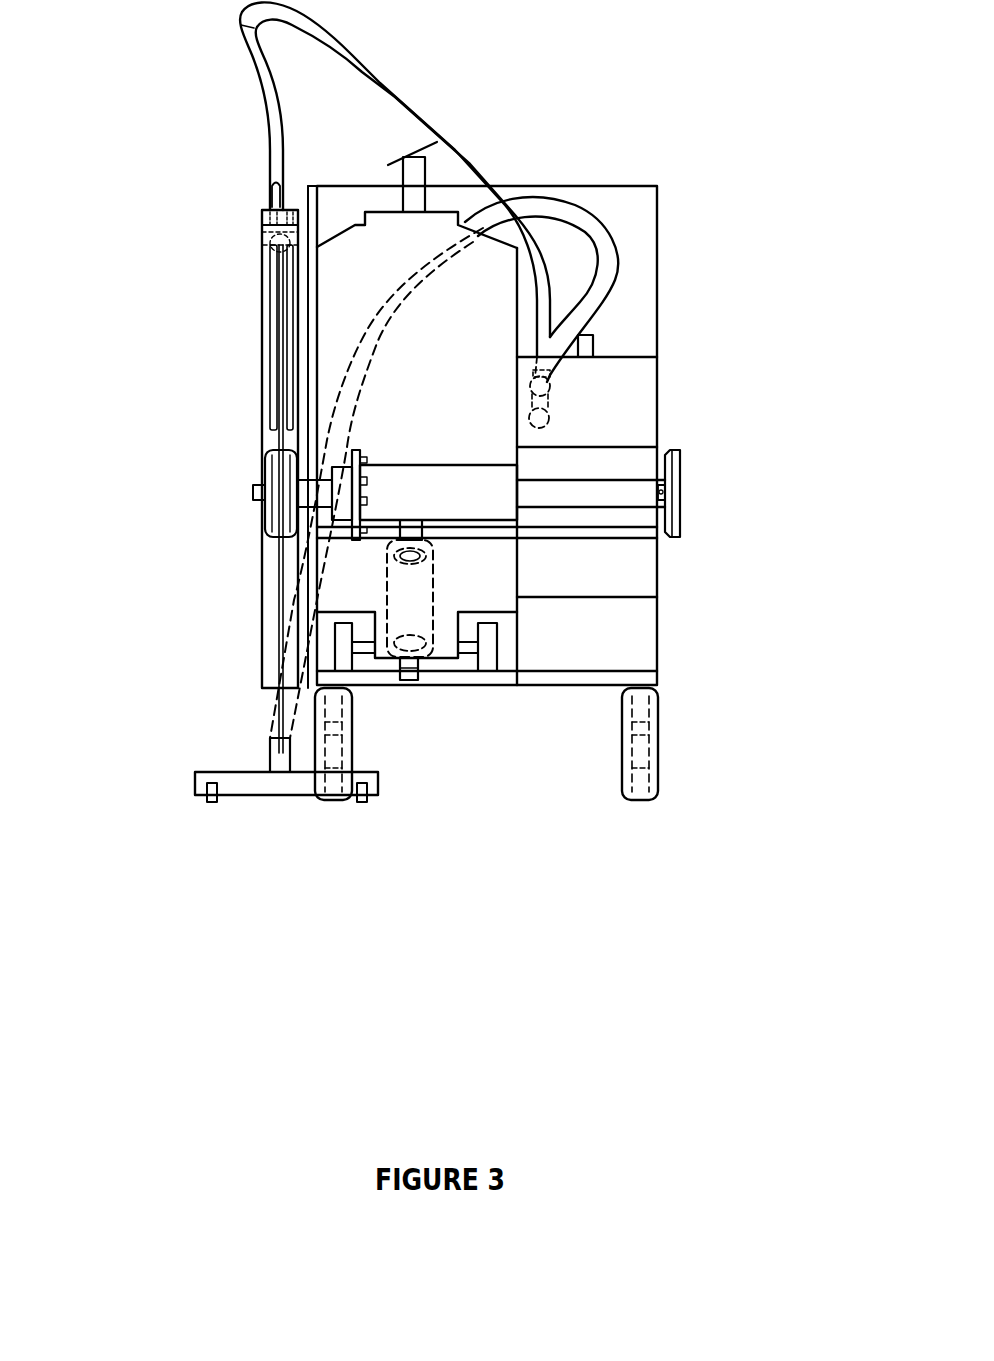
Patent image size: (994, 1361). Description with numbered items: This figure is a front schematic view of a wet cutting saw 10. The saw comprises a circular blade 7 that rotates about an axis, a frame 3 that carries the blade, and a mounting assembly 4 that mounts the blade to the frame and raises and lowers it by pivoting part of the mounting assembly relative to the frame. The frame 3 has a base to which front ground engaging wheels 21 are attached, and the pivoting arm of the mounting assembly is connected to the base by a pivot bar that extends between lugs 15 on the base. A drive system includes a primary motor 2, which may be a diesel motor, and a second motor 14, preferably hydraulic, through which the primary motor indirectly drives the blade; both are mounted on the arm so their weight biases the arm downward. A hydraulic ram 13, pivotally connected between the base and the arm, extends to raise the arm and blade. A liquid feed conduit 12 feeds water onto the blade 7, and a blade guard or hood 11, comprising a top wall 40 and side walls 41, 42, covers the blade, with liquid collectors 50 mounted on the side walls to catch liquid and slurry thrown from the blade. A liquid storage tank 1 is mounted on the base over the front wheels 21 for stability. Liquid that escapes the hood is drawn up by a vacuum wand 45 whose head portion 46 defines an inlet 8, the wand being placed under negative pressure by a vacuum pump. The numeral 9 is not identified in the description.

The liquid storage tank 1 is at (625, 387).
The primary motor 2 is at (393, 240).
The frame 3 is at (577, 682).
The mounting assembly 4 is at (497, 578).
The circular blade 7 is at (275, 578).
The inlet 8 is at (282, 773).
The bracket 9 is at (348, 463).
The wet cutting saw 10 is at (632, 233).
The blade guard or hood 11 is at (262, 307).
The liquid feed conduit 12 is at (267, 128).
The hydraulic ram 13 is at (415, 595).
The second motor 14 is at (420, 495).
The lugs 15 is at (350, 660).
The front pair of ground engaging wheels 21 is at (325, 802).
The top wall 40 is at (262, 207).
The side wall 41 is at (262, 268).
The side wall 42 is at (303, 207).
The vacuum wand 45 is at (367, 343).
The head portion 46 is at (225, 803).
The liquid collectors 50 is at (296, 432).